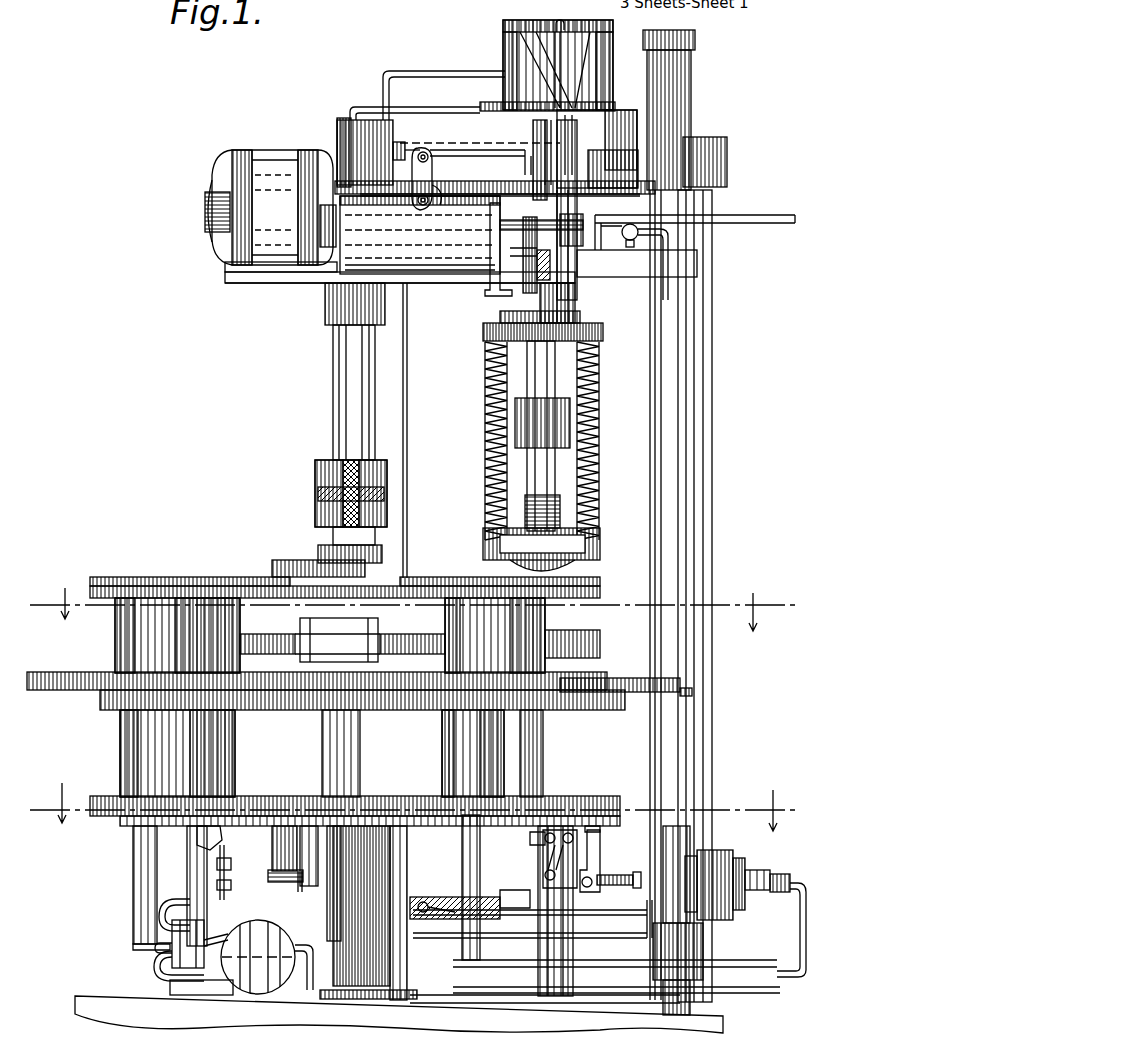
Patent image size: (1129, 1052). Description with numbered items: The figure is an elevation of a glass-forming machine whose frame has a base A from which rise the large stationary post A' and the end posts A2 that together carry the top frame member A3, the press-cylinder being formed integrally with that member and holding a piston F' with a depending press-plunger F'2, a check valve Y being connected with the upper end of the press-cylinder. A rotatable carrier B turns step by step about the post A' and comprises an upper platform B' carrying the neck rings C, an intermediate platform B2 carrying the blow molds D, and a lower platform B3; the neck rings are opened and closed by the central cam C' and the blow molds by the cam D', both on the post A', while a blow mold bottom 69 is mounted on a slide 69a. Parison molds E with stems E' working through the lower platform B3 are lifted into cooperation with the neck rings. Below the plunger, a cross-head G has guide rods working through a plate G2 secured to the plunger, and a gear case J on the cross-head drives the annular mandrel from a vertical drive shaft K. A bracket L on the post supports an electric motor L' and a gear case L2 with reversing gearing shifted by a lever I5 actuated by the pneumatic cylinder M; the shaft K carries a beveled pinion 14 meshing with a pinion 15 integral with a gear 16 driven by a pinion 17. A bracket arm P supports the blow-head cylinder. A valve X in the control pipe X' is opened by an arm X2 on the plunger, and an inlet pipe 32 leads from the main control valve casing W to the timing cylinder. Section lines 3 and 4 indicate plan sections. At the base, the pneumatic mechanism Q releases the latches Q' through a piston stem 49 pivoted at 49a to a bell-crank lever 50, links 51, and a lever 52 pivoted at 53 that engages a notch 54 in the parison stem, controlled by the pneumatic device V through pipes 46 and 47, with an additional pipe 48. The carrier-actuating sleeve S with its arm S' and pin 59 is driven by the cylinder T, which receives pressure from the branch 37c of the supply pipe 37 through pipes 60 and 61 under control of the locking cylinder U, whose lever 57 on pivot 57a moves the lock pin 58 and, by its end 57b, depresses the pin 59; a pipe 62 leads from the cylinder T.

The piston F' is at (530, 65).
The check valve Y is at (564, 26).
The vertical drive shaft K is at (691, 60).
The top frame member A3 is at (727, 160).
The pneumatic cylinder M is at (362, 140).
The electric motor L' is at (265, 204).
The gear case L2 is at (377, 260).
The lever I5 is at (425, 205).
The pinion 17 is at (500, 224).
The gear 16 is at (510, 262).
The pinion 15 is at (510, 294).
The beveled pinion 14 is at (562, 280).
The bracket L is at (400, 298).
The stationary post A' is at (332, 423).
The bracket arm P is at (340, 478).
The plate or bracket G2 is at (598, 342).
The plunger rod F'2 is at (508, 436).
The gear case J is at (585, 522).
The cross-head G is at (592, 564).
The control pipe X' is at (695, 257).
The valve X is at (626, 262).
The arm X2 is at (609, 278).
The end posts A2 is at (700, 543).
The inlet pipe 32 is at (651, 406).
The section line 4- 4 is at (415, 609).
The section line 3- 3 is at (415, 807).
The neck rings C is at (345, 572).
The central cam C' is at (315, 555).
The blow molds D is at (306, 635).
The cam D' is at (342, 643).
The upper table or platform B' is at (580, 636).
The rotatable carrier B is at (317, 697).
The intermediate platform B2 is at (608, 714).
The blow mold bottom 69 is at (600, 680).
The slide 69a is at (692, 692).
The parison molds E is at (312, 753).
The stems or shanks E' is at (446, 835).
The lower platform B3 is at (602, 782).
The lock pin 58 is at (205, 828).
The lever 57 is at (225, 856).
The pivot 57a is at (231, 874).
The lever end 57b is at (231, 890).
The carrier-actuating pin 59 is at (280, 882).
The pipe 61 is at (172, 900).
The branch pipe 37c is at (156, 948).
The pipe 60 is at (156, 978).
The pneumatic carrier-locking mechanism U is at (224, 921).
The cylinder T is at (258, 957).
The carrier-actuating sleeve S is at (371, 913).
The carrier-actuating arm S' is at (320, 883).
The main control valve casing W is at (412, 897).
The pneumatic device V is at (490, 905).
The pipe 46 is at (536, 906).
The notch 54 is at (530, 838).
The links 51 is at (545, 860).
The bell-crank lever 50 is at (598, 846).
The stem 49 is at (618, 875).
The pivot 49a is at (594, 884).
The lever 52 is at (560, 828).
The pivot 53 is at (582, 825).
The latches Q' is at (604, 813).
The pneumatic mechanism Q is at (737, 860).
The main pressure supply pipe 37 is at (750, 964).
The pipe 47 is at (456, 966).
The pipe 48 is at (705, 936).
The pipe 62 is at (600, 1002).
The base A is at (383, 1005).